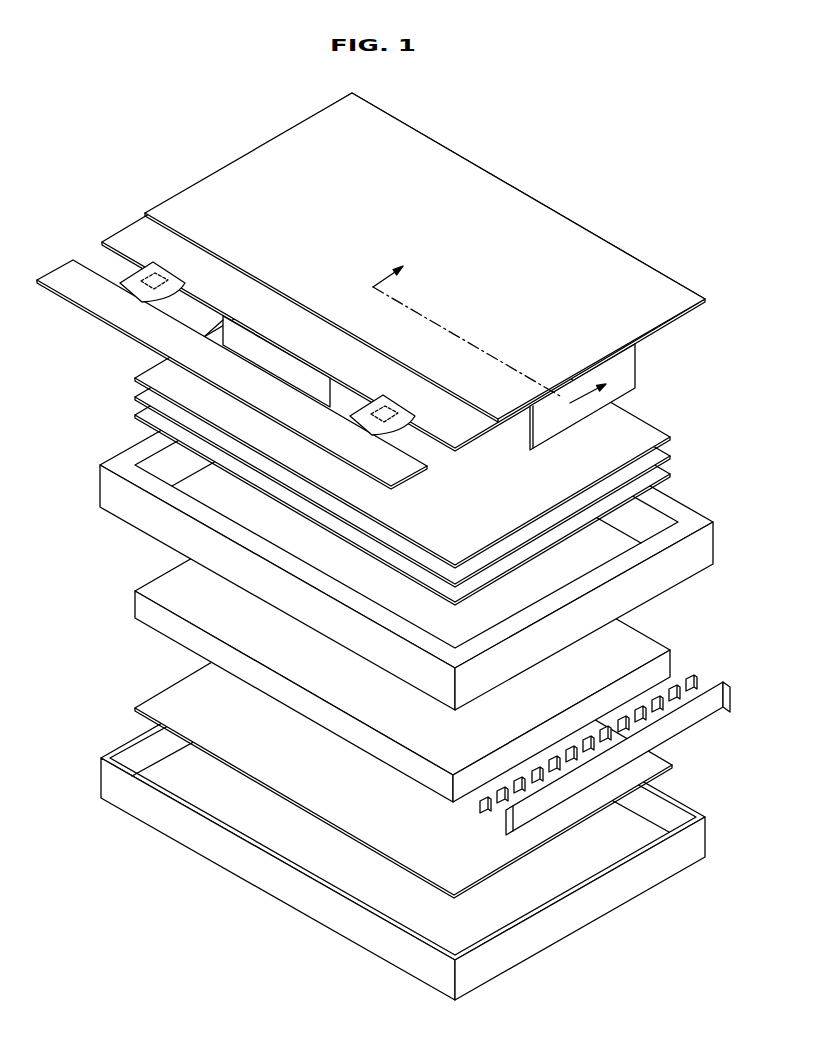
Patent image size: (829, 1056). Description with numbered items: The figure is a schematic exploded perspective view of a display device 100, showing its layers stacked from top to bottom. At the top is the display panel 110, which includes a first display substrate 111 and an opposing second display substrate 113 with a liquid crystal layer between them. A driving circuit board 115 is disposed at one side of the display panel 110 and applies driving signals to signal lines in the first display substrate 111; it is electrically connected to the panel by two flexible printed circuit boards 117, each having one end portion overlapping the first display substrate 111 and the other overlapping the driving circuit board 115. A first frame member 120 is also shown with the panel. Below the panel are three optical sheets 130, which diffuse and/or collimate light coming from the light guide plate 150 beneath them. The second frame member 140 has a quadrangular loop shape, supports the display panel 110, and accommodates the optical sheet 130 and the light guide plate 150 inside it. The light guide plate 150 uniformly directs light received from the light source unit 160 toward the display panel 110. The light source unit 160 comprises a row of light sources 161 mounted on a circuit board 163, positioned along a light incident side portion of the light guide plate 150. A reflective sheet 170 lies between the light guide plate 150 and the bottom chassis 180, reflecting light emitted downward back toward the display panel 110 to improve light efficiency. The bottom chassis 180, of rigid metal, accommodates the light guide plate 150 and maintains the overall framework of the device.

The display device 100 is at (414, 546).
The display panel 110 is at (364, 272).
The first display substrate 111 is at (143, 235).
The second display substrate 113 is at (182, 200).
The driving circuit board 115 is at (85, 287).
The flexible printed circuit board 117 is at (137, 292).
The first frame member 120 is at (628, 366).
The optical sheet 130 is at (678, 437).
The second frame member 140 is at (693, 548).
The light guide plate 150 is at (637, 642).
The light source unit 160 is at (648, 750).
The light source 161 is at (698, 683).
The circuit board 163 is at (716, 705).
The reflective sheet 170 is at (178, 696).
The bottom chassis 180 is at (694, 842).